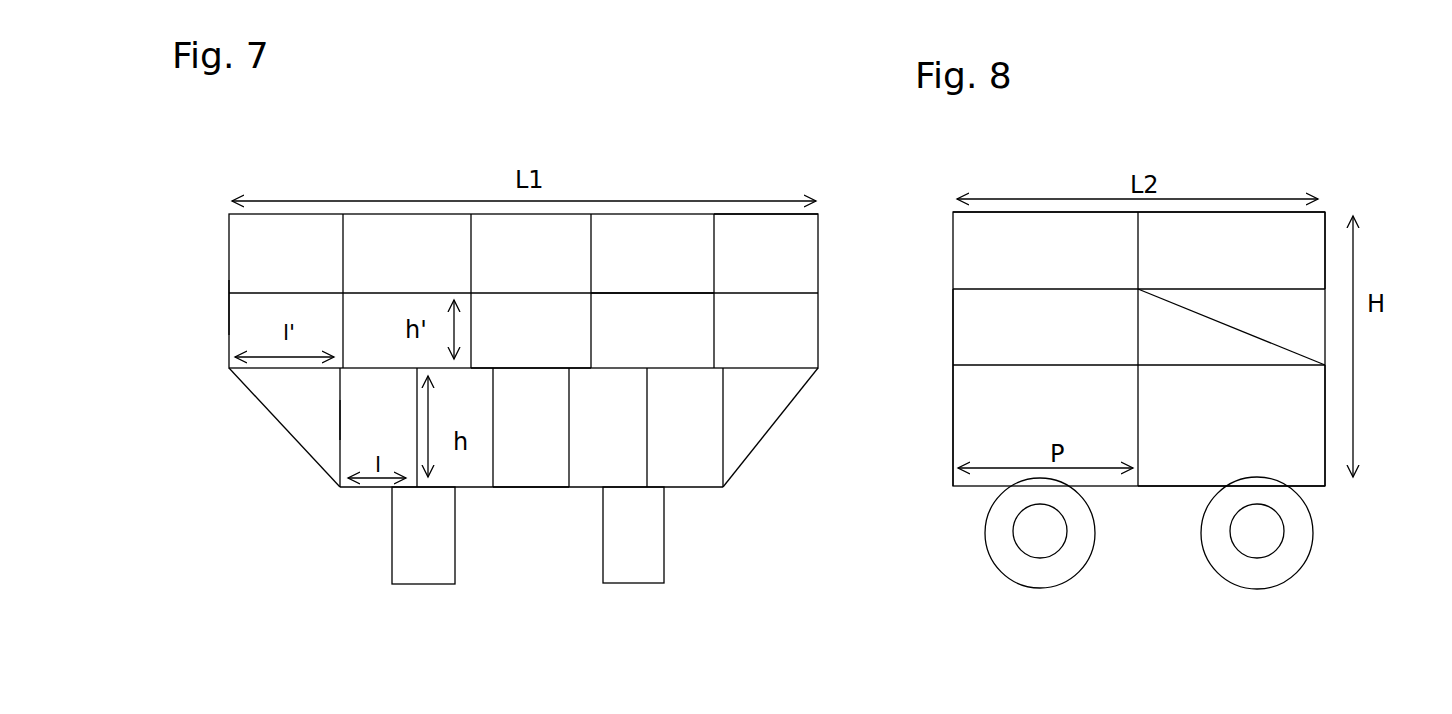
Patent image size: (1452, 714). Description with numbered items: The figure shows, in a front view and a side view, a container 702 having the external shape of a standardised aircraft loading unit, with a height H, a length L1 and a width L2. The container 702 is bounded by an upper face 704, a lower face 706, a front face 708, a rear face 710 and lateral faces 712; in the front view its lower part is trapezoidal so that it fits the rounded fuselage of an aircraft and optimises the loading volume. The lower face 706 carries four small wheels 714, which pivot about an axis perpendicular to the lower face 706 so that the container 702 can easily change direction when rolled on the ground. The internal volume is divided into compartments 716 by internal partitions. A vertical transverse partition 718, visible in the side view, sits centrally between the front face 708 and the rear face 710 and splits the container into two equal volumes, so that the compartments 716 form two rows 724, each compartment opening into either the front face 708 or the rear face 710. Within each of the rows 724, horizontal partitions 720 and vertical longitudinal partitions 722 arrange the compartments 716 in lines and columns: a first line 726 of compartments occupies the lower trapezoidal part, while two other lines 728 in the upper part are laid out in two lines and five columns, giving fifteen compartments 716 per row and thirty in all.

In FIG. 7, the container 702 is at (377, 210).
In FIG. 8, the container 702 is at (946, 245).
In FIG. 7, the upper face 704 is at (748, 212).
In FIG. 8, the upper face 704 is at (1273, 208).
In FIG. 7, the lower face 706 is at (529, 485).
In FIG. 8, the lower face 706 is at (1198, 485).
In FIG. 7, the front face 708 is at (305, 404).
In FIG. 8, the front face 708 is at (1323, 255).
In FIG. 8, the rear face 710 is at (950, 395).
In FIG. 7, the lateral faces 712 is at (228, 238).
In FIG. 8, the lateral faces 712 is at (1371, 425).
In FIG. 7, the small wheels 714 is at (640, 532).
In FIG. 8, the small wheels 714 is at (1250, 530).
In FIG. 7, the compartments 716 is at (690, 403).
In FIG. 8, the compartments 716 is at (1012, 402).
In FIG. 8, the vertical transverse partition 718 is at (1137, 246).
In FIG. 7, the horizontal partitions 720 is at (675, 365).
In FIG. 8, the horizontal partitions 720 is at (1247, 365).
In FIG. 7, the vertical longitudinal partitions 722 is at (590, 303).
In FIG. 8, the rows 724 is at (1022, 205).
In FIG. 7, the first line 726 is at (338, 430).
In FIG. 7, the other lines 728 is at (225, 280).